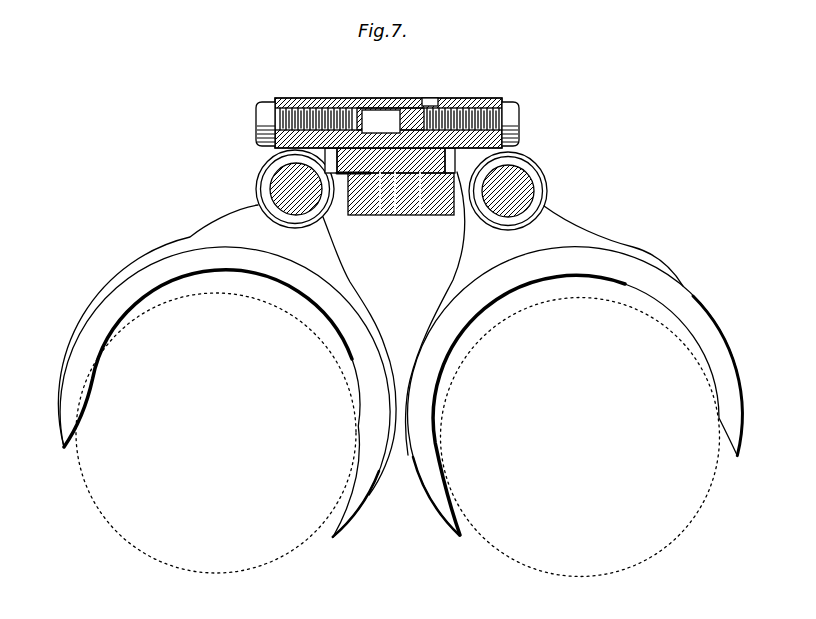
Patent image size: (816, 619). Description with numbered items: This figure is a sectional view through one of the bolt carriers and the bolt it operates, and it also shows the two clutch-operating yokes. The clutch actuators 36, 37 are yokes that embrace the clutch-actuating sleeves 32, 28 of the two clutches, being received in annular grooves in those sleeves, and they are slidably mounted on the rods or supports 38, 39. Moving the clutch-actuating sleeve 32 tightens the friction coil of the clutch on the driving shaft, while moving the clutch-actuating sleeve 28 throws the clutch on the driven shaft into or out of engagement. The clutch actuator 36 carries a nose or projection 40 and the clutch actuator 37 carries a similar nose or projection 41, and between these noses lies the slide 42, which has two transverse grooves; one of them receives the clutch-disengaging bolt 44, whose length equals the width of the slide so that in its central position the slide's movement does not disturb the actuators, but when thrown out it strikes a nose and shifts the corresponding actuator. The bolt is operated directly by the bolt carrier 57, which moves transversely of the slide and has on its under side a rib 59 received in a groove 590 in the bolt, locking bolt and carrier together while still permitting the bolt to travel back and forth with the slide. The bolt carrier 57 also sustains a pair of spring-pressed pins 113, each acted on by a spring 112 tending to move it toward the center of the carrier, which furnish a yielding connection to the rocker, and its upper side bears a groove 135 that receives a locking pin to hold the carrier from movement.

The spring 112 is at (322, 71).
The spring-pressed pin 113 is at (397, 107).
The bolt carrier 57 is at (404, 99).
The groove 135 is at (432, 99).
The nose or projection 40 is at (305, 150).
The nose or projection 41 is at (490, 160).
The rod or support 38 is at (280, 174).
The rod or support 39 is at (530, 178).
The clutch actuator 36 is at (130, 272).
The clutch actuator 37 is at (647, 270).
The clutch-actuating sleeve 32 is at (120, 533).
The clutch-actuating sleeve 28 is at (682, 528).
The clutch-disengaging bolt 44 is at (348, 215).
The groove 590 is at (385, 208).
The slide 42 is at (412, 217).
The rib 59 is at (420, 197).